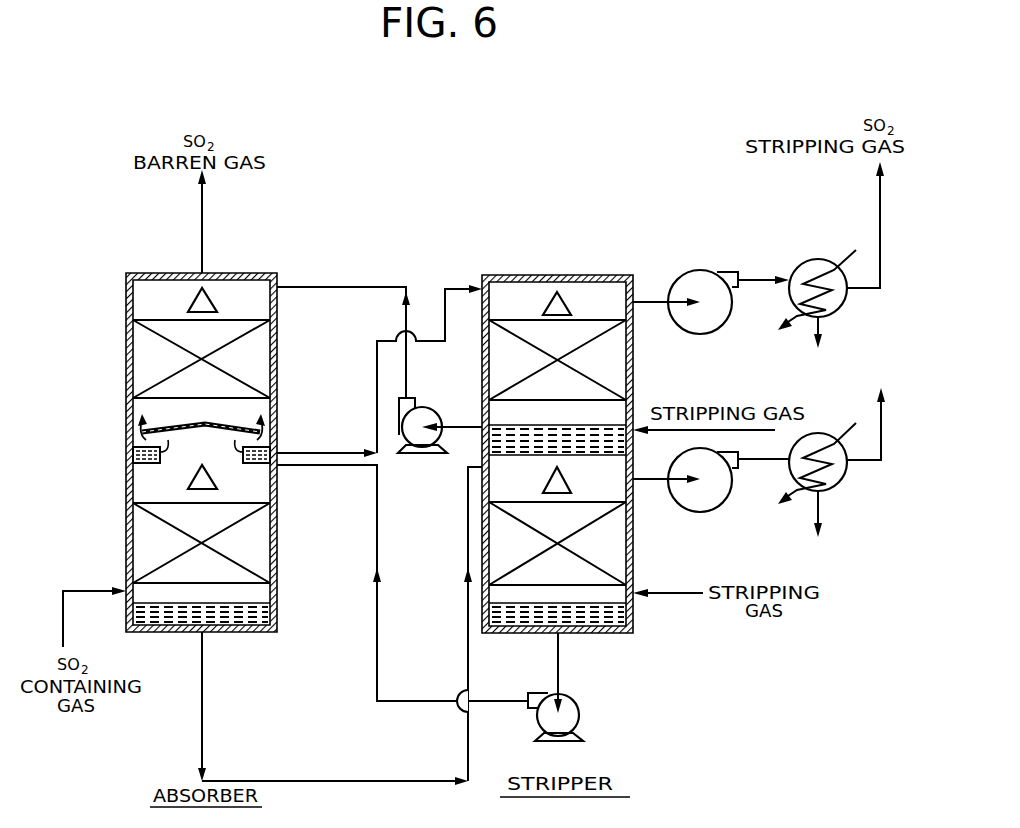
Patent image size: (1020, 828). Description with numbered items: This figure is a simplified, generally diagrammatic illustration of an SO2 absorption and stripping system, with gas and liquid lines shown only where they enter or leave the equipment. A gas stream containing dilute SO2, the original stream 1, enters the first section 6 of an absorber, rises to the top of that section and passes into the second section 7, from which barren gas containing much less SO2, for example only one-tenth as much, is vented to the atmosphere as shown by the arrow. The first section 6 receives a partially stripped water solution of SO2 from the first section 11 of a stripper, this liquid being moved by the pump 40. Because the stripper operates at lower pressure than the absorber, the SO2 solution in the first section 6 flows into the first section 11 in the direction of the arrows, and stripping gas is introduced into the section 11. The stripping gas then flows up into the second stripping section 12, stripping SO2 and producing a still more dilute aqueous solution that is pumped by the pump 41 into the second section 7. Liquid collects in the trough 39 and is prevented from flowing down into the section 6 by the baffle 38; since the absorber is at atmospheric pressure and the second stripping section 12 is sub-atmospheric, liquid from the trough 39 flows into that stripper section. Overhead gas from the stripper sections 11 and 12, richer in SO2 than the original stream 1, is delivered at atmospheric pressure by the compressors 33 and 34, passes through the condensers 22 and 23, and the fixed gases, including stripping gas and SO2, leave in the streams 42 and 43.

The original stream 1 is at (63, 634).
The first section of absorber 6 is at (277, 566).
The second section of absorber 7 is at (277, 349).
The first section of stripper 11 is at (633, 555).
The second stripping section 12 is at (633, 365).
The condenser 22 is at (840, 482).
The condenser 23 is at (840, 308).
The compressor 33 is at (708, 511).
The compressor 34 is at (708, 333).
The baffle 38 is at (212, 424).
The trough 39 is at (272, 447).
The pump 40 is at (580, 715).
The pump 41 is at (436, 416).
The stream 42 is at (882, 444).
The stream 43 is at (880, 200).